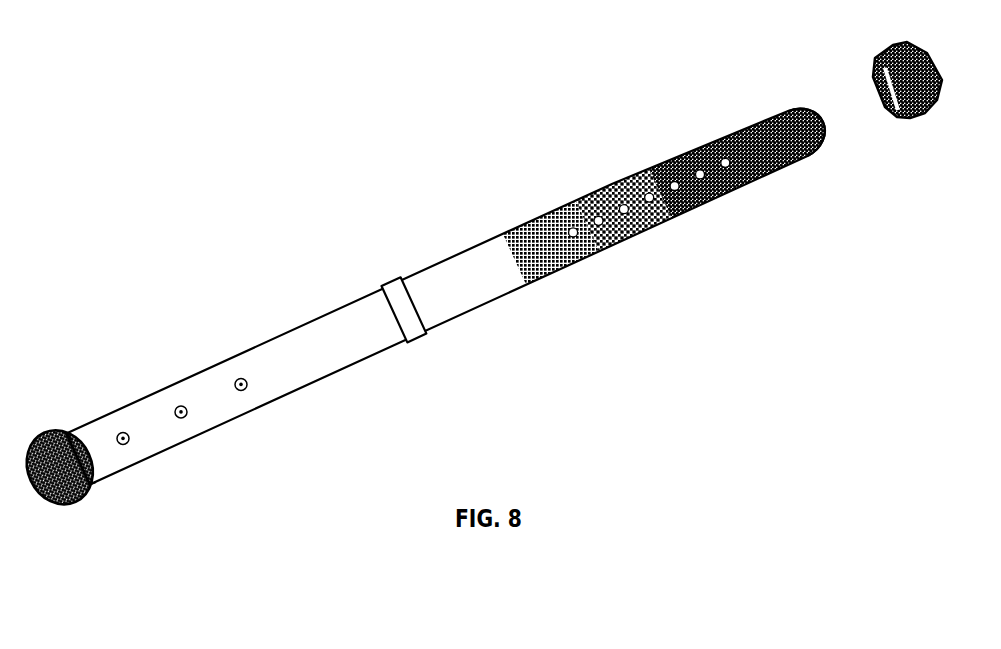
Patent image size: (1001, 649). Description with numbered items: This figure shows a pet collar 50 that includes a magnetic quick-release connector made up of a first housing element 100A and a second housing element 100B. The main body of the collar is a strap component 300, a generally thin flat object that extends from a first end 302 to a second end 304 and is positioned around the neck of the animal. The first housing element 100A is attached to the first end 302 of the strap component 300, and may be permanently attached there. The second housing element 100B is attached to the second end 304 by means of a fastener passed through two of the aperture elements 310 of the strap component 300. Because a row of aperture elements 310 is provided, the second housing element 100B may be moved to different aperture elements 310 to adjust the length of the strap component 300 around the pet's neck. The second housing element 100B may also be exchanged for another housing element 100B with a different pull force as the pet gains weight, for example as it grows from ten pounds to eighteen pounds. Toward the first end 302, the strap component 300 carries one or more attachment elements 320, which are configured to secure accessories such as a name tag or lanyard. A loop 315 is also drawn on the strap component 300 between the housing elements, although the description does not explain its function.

The pet collar 50 is at (231, 148).
The first housing element 100A is at (42, 429).
The second housing element 100B is at (873, 68).
The strap component 300 is at (327, 338).
The first end 302 is at (97, 448).
The second end 304 is at (782, 123).
The aperture elements 310 is at (600, 222).
The strap loop 315 is at (407, 308).
The attachment elements 320 is at (183, 417).